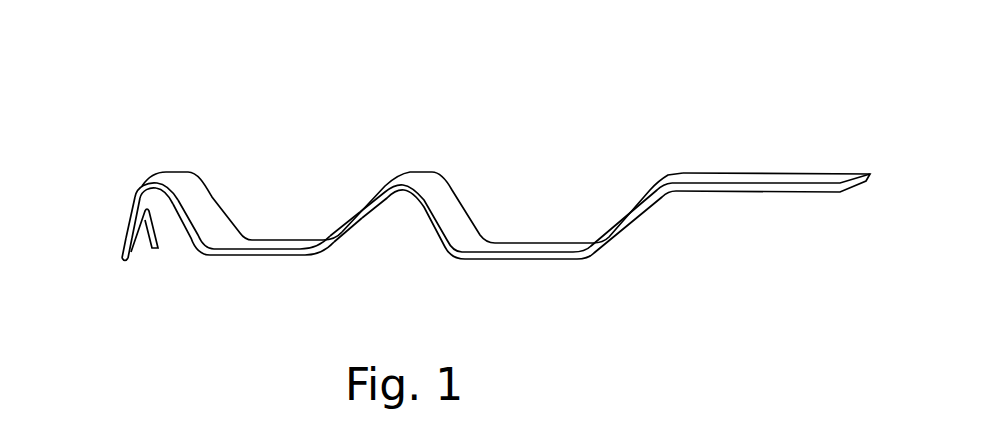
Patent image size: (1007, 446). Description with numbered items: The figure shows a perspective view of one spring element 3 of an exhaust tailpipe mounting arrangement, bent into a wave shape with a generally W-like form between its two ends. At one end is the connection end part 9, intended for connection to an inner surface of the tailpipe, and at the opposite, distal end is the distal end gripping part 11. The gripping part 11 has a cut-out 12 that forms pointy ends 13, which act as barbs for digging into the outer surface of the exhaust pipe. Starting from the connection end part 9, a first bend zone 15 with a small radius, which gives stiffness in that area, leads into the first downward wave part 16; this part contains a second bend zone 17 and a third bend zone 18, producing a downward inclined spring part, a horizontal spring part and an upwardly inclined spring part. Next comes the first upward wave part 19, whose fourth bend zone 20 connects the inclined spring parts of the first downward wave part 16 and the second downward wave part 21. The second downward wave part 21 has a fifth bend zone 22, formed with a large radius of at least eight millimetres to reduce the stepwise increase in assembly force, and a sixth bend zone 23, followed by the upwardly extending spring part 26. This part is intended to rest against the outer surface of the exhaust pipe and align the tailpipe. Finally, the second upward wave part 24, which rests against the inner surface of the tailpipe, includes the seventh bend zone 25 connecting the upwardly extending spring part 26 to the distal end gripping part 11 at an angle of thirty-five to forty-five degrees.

The spring element 3 is at (150, 130).
The connection end part 9 is at (770, 177).
The distal end gripping part 11 is at (129, 219).
The cut-out 12 is at (142, 249).
The pointy end 13 is at (122, 263).
The first bend zone 15 is at (657, 180).
The first downward wave part 16 is at (440, 290).
The second bend zone 17 is at (593, 242).
The third bend zone 18 is at (474, 240).
The first upward wave part 19 is at (390, 132).
The fourth bend zone 20 is at (419, 173).
The second downward wave part 21 is at (357, 290).
The fifth bend zone 22 is at (331, 224).
The sixth bend zone 23 is at (223, 235).
The second upward wave part 24 is at (123, 290).
The seventh bend zone 25 is at (173, 179).
The upwardly extending spring part 26 is at (205, 205).